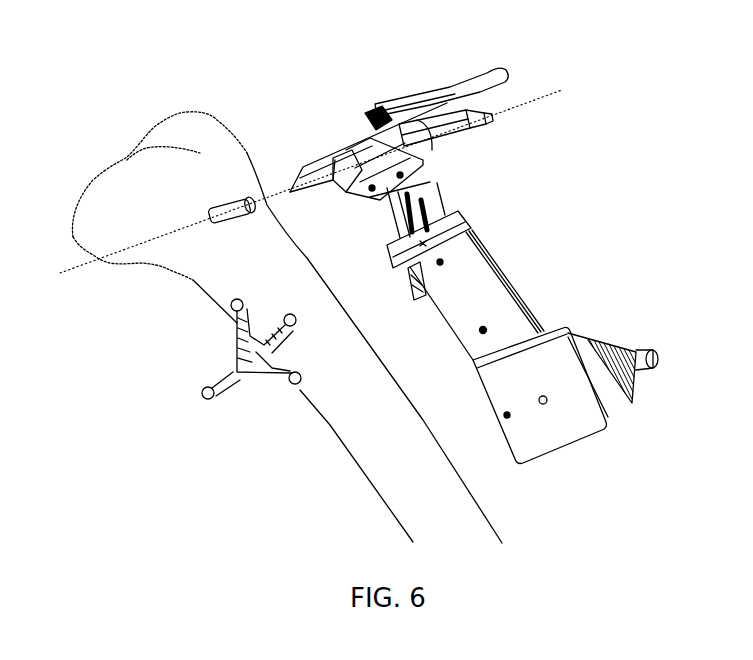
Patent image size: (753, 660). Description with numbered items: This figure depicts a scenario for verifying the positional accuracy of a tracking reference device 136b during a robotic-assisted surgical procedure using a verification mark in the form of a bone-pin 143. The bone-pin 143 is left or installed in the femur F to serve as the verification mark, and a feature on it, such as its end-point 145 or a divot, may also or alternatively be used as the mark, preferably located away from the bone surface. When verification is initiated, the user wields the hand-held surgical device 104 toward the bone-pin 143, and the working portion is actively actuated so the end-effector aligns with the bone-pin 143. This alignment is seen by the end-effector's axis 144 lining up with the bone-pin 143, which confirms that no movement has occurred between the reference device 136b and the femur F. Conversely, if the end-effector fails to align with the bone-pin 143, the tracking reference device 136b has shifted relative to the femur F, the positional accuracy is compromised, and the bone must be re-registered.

The hand-held surgical device 104 is at (343, 57).
The bone-pin 143 is at (222, 210).
The end-effector's axis 144 is at (545, 97).
The end-point 145 is at (254, 203).
The tracking reference device 136b is at (234, 370).
The femur F is at (380, 495).